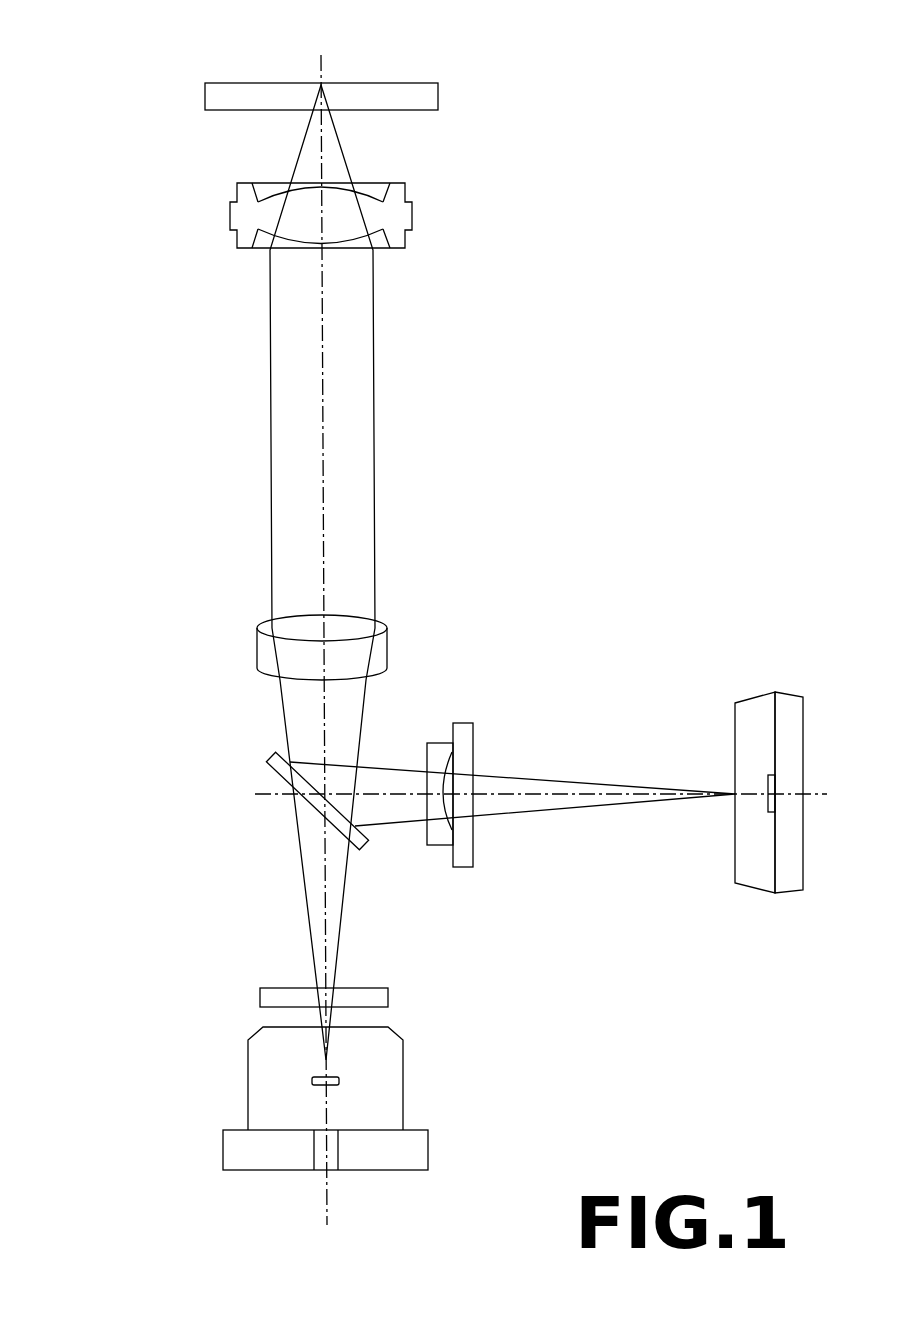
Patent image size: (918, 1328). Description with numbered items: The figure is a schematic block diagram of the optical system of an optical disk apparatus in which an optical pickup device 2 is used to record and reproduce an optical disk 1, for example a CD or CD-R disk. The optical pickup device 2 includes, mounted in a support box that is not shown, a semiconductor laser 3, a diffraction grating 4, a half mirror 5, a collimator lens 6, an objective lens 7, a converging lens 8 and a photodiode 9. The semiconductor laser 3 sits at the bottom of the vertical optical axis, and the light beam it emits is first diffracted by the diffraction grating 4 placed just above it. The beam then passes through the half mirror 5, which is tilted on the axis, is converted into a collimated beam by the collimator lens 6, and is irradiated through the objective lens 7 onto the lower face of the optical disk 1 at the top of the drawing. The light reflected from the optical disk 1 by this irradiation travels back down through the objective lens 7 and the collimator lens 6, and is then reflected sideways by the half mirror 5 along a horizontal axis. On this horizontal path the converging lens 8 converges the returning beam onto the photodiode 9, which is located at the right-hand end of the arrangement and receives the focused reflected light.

The optical disk 1 is at (403, 92).
The optical pickup device 2 is at (615, 92).
The semiconductor laser 3 is at (388, 1097).
The diffraction grating 4 is at (380, 995).
The half mirror 5 is at (273, 752).
The collimator lens 6 is at (385, 642).
The objective lens 7 is at (400, 217).
The converging lens 8 is at (463, 867).
The photodiode 9 is at (750, 708).